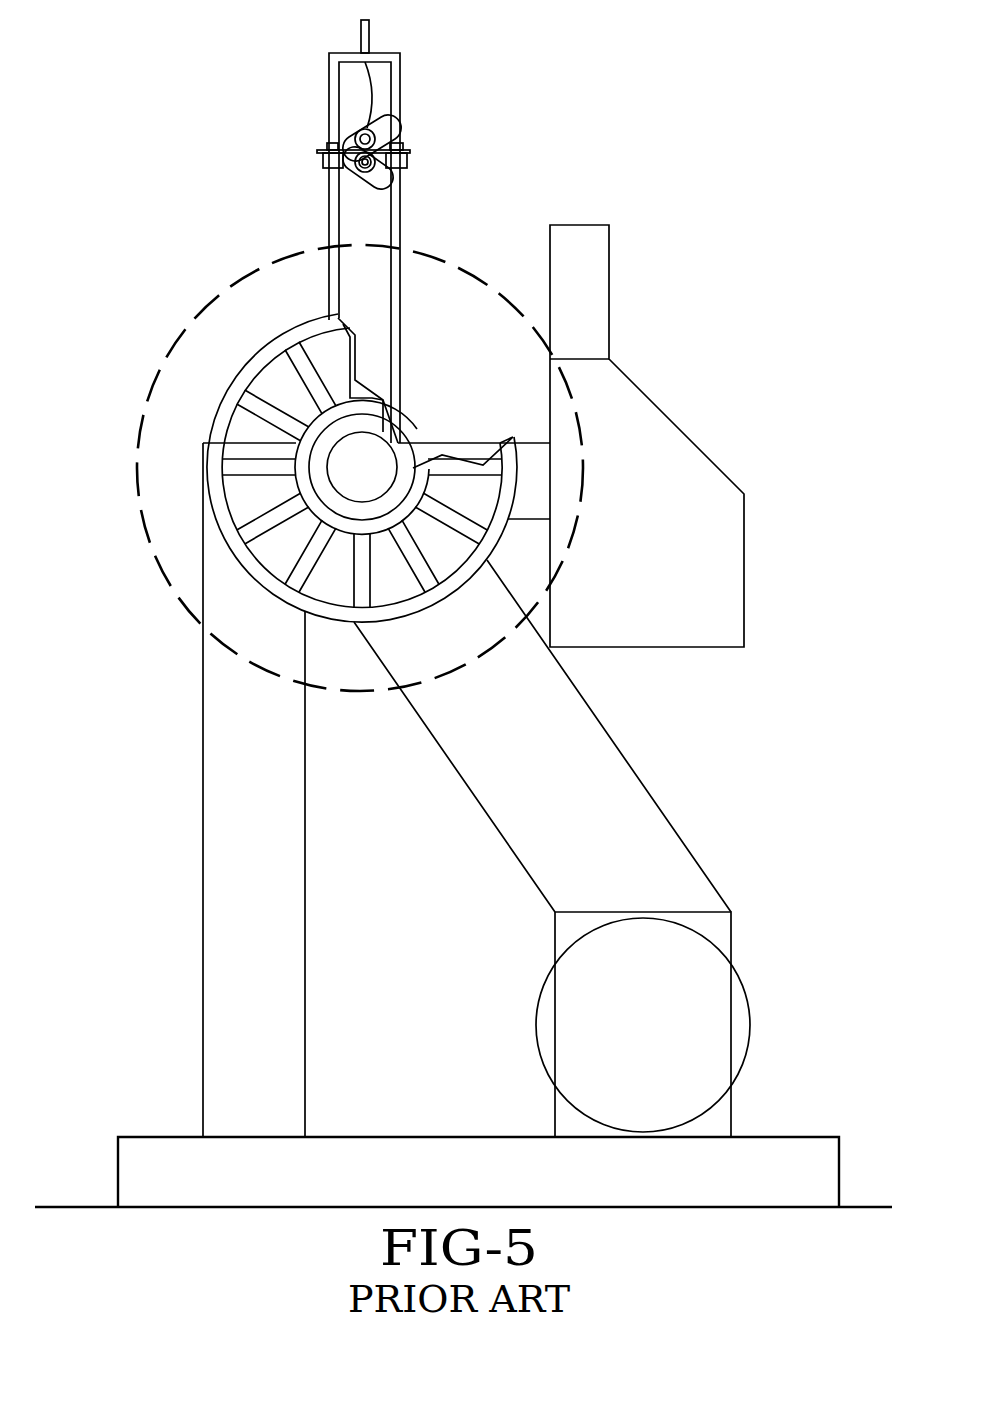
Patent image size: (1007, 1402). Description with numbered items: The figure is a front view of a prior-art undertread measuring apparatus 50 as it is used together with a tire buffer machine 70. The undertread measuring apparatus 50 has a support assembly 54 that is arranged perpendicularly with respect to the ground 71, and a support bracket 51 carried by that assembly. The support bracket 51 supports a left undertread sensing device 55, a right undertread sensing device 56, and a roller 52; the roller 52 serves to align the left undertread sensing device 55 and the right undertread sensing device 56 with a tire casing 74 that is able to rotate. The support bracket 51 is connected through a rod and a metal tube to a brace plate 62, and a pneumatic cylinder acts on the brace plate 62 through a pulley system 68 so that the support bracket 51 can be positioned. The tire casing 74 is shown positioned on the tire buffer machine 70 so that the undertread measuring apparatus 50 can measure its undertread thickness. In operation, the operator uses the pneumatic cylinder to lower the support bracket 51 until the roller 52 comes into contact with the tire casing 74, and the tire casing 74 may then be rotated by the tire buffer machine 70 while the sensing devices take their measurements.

The undertread measuring apparatus 50 is at (422, 104).
The support bracket 51 is at (382, 147).
The roller 52 is at (363, 164).
The support assembly 54 is at (329, 83).
The left undertread sensing device 55 is at (325, 160).
The right undertread sensing device 56 is at (403, 160).
The brace plate 62 is at (352, 140).
The pulley system 68 is at (369, 28).
The tire buffer machine 70 is at (610, 772).
The ground 71 is at (875, 1207).
The tire casing 74 is at (217, 330).